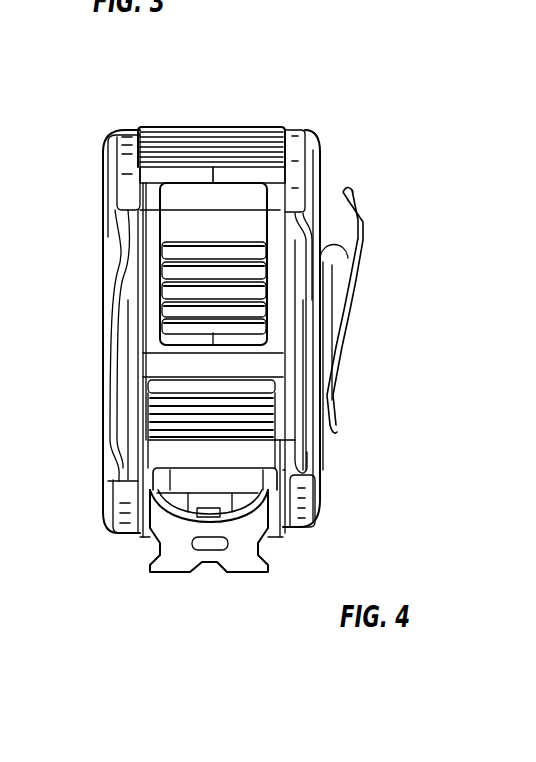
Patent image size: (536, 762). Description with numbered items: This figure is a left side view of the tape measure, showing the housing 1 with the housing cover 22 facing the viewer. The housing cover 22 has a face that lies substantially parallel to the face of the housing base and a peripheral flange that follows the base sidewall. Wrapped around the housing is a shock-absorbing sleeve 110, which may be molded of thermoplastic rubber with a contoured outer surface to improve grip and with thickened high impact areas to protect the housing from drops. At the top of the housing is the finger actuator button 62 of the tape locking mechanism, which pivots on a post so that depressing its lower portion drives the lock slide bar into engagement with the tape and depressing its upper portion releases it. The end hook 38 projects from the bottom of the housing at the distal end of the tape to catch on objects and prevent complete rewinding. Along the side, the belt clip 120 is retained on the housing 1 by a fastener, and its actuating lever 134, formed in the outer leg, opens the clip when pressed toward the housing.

The housing 1 is at (206, 64).
The housing cover 22 is at (102, 512).
The end hook 38 is at (160, 563).
The finger actuator button 62 is at (173, 227).
The shock-absorbing sleeve 110 is at (223, 112).
The belt clip 120 is at (348, 296).
The actuating lever 134 is at (348, 192).